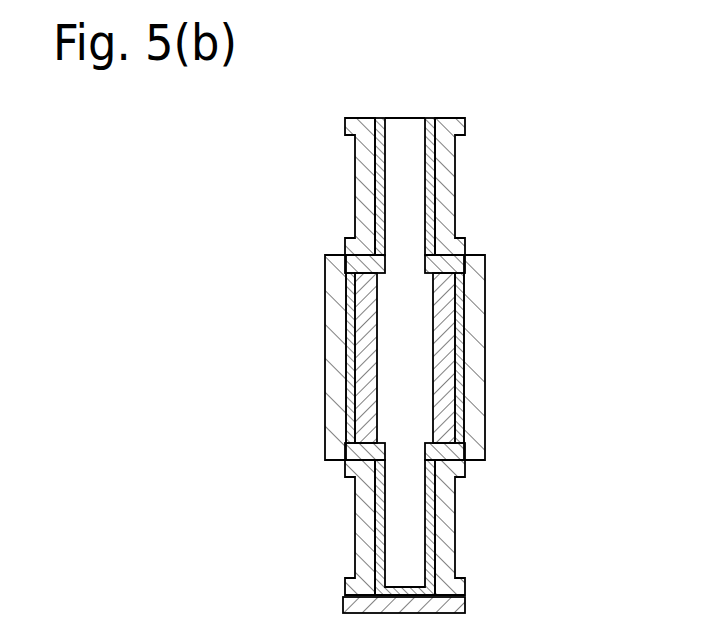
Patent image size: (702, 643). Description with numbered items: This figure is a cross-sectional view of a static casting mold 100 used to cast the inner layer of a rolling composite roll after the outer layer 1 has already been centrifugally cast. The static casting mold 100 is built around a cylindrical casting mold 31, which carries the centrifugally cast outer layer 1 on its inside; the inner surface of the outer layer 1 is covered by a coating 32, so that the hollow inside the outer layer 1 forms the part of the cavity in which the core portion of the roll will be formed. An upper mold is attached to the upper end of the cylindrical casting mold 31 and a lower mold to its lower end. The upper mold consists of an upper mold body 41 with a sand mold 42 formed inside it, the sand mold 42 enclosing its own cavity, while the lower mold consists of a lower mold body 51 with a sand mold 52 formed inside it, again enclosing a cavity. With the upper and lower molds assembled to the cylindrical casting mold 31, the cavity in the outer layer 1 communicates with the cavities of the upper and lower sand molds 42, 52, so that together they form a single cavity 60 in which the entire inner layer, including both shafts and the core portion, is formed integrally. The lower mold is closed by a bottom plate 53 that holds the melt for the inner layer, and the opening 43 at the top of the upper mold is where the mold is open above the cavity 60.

The outer layer 1 is at (450, 385).
The cylindrical casting mold 31 is at (478, 348).
The coating 32 is at (462, 293).
The upper mold body 41 is at (448, 163).
The sand mold 42 is at (433, 205).
The upper opening 43 is at (410, 118).
The lower mold body 51 is at (447, 510).
The sand mold 52 is at (430, 547).
The bottom plate 53 is at (458, 602).
The cavity 60 is at (413, 363).
The static casting mold 100 is at (566, 264).